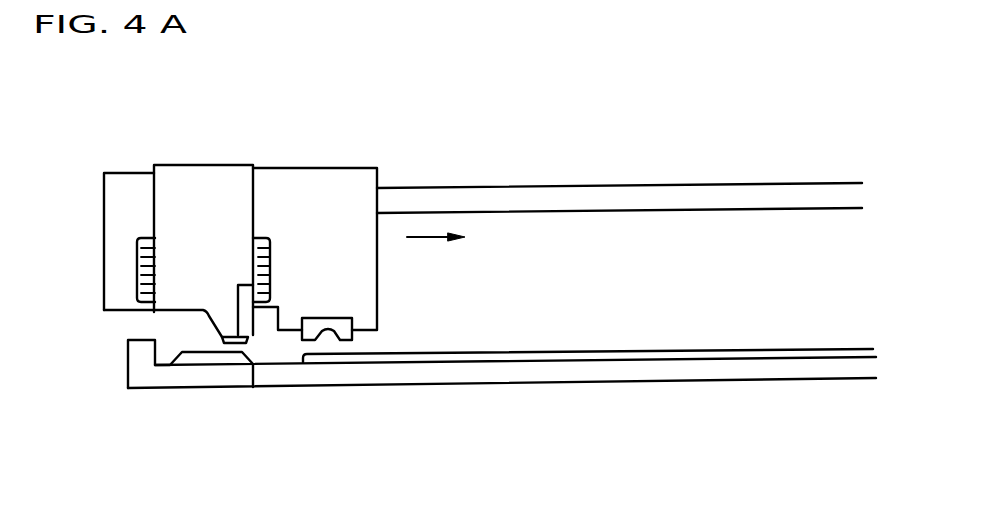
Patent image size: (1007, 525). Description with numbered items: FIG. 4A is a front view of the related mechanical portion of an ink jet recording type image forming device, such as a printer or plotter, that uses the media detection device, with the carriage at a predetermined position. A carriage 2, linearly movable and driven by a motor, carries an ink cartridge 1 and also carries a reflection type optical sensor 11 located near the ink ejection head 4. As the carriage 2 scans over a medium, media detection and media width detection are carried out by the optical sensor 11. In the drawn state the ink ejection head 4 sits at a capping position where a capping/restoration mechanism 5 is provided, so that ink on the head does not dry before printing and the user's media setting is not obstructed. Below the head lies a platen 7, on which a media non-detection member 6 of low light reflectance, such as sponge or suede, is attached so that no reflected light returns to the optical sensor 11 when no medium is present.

The ink cartridge 1 is at (227, 165).
The carriage 2 is at (358, 177).
The reflection type optical sensor 11 is at (350, 318).
The ink ejection head 4 is at (250, 343).
The capping/restoration mechanism 5 is at (203, 360).
The media non-detection member 6 is at (550, 353).
The platen 7 is at (660, 373).